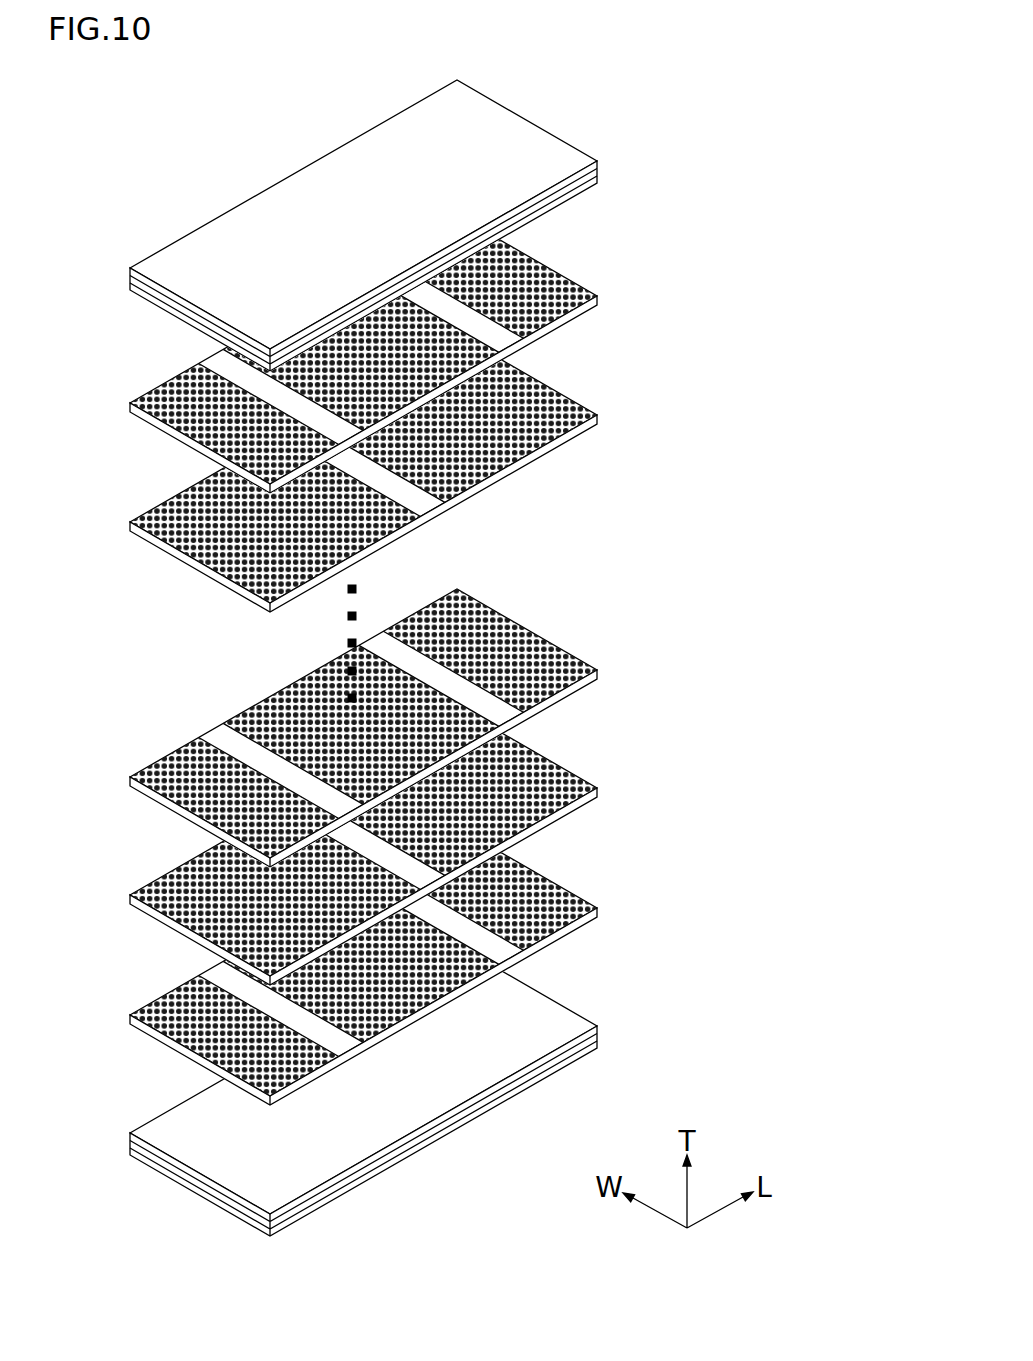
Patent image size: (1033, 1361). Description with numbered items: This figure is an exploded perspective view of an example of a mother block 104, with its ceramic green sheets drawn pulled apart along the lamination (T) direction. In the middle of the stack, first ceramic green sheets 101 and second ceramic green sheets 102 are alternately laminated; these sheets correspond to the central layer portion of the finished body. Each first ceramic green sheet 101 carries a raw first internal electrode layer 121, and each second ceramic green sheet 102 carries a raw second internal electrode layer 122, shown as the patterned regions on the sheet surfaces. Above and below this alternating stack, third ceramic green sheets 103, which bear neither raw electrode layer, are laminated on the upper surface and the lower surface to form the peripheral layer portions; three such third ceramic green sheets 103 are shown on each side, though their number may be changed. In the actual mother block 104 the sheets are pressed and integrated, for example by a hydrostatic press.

The mother block 104 is at (175, 122).
The third ceramic green sheet 103 is at (396, 657).
The first ceramic green sheet 101 is at (355, 659).
The second ceramic green sheet 102 is at (355, 659).
The raw first internal electrode layer 121 is at (322, 655).
The raw second internal electrode layer 122 is at (322, 655).